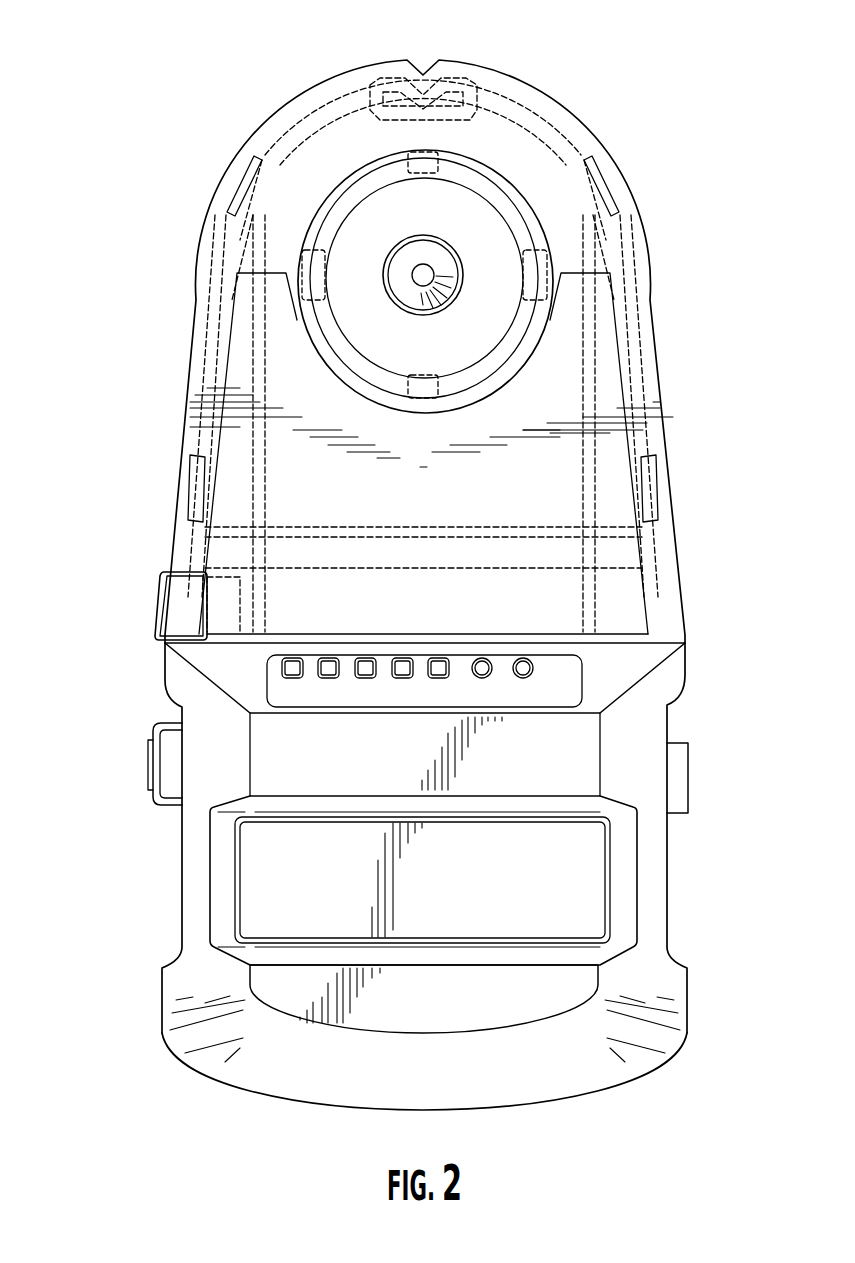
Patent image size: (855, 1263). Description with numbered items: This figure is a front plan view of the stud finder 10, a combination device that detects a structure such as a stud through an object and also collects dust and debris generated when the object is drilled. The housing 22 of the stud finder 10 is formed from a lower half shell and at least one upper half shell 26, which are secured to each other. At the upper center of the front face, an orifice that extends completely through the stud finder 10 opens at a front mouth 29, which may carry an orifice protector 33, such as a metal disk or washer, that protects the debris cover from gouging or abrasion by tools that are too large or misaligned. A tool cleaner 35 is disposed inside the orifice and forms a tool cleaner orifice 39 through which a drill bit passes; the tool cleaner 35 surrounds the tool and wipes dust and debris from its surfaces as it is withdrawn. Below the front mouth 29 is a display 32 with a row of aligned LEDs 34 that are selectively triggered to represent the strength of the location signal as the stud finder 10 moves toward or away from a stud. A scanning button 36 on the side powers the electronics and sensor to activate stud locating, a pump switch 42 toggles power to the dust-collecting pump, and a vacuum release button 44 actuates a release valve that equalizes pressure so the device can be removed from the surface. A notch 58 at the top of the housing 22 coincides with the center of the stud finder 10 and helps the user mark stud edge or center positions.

The stud finder 10 is at (141, 110).
The housing 22 is at (698, 1027).
The upper half shell 26 is at (162, 1001).
The front mouth 29 is at (487, 180).
The display 32 is at (588, 683).
The orifice protector 33 is at (487, 323).
The LEDs 34 is at (525, 667).
The tool cleaner 35 is at (440, 253).
The scanning button 36 is at (157, 608).
The tool cleaner orifice 39 is at (437, 270).
The pump switch 42 is at (688, 787).
The vacuum release button 44 is at (148, 775).
The notch 58 is at (421, 61).